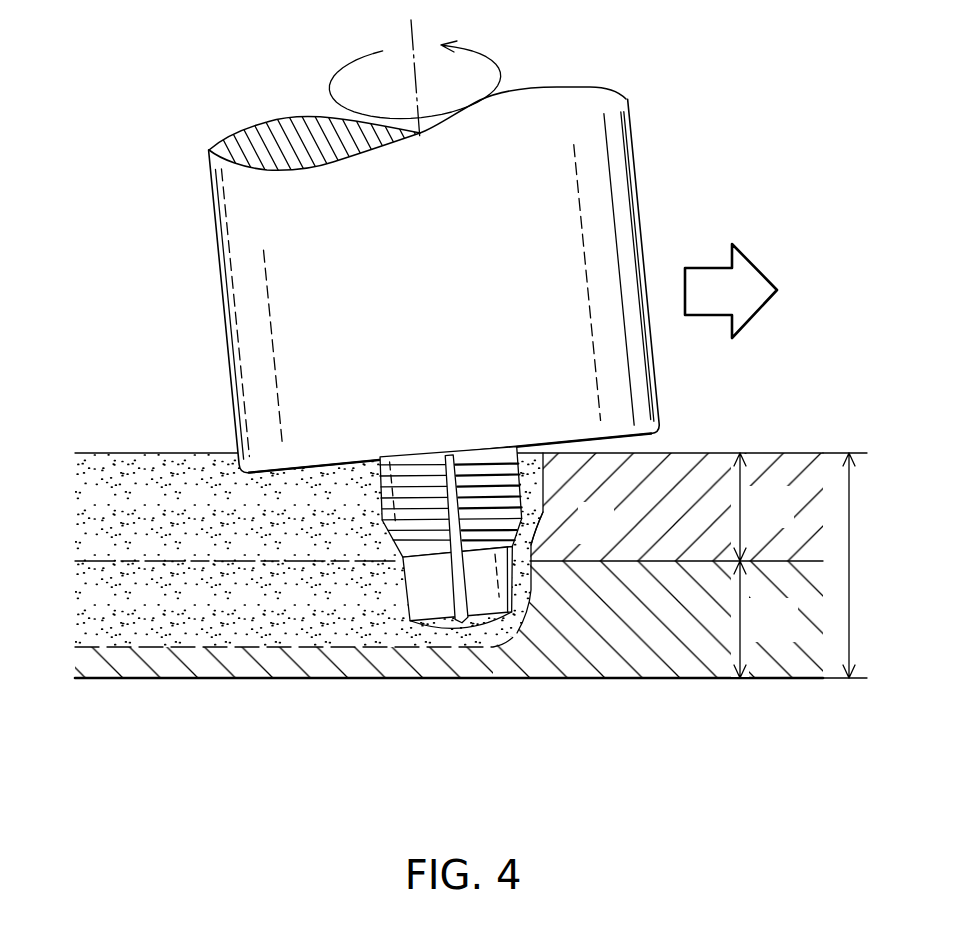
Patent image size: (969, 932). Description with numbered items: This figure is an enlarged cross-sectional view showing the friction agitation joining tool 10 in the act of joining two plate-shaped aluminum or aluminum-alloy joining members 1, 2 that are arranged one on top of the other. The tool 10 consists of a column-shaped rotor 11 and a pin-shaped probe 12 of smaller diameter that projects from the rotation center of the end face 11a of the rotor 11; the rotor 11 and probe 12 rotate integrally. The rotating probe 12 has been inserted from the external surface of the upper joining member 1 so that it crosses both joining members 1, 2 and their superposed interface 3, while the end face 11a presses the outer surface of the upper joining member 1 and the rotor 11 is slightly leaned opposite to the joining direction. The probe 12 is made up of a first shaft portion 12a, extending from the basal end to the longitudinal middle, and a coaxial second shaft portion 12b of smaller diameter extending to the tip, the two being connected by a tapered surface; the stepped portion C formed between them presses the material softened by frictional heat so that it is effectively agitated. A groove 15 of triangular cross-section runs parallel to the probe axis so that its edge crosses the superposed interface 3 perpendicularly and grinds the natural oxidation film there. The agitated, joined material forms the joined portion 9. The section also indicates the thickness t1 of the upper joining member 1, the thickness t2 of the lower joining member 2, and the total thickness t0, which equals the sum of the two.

The upper joining member 1 is at (790, 470).
The lower joining member 2 is at (805, 637).
The superposed interface 3 is at (663, 560).
The joined portion 9 is at (103, 468).
The friction agitation joining tool 10 is at (398, 421).
The rotor 11 is at (382, 300).
The end face of the rotor 11a is at (268, 472).
The probe 12 is at (386, 629).
The first shaft portion 12a is at (395, 500).
The second shaft portion 12b is at (420, 587).
The groove 15 is at (467, 587).
The stepped portion C is at (541, 537).
The total thickness of both joining members t0 is at (854, 565).
The thickness of the upper joining member t1 is at (757, 507).
The thickness of the lower joining member t2 is at (757, 619).